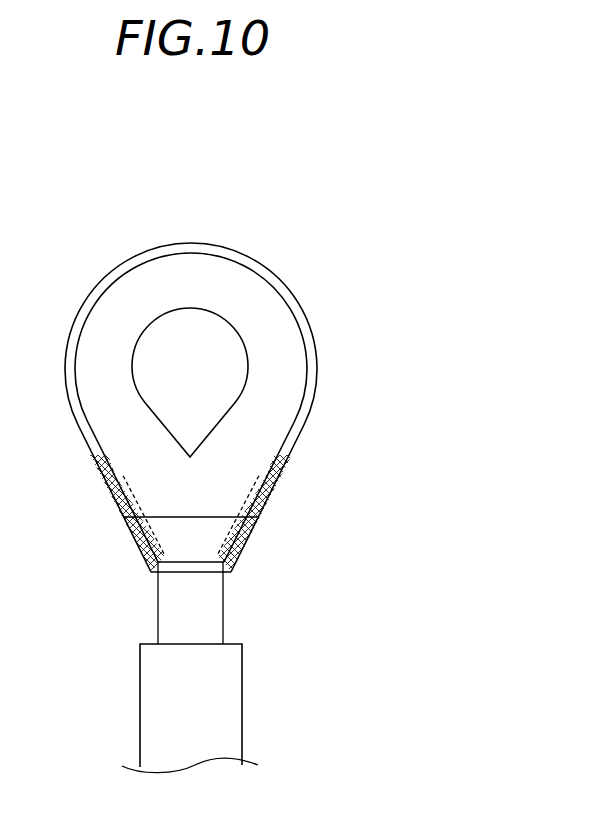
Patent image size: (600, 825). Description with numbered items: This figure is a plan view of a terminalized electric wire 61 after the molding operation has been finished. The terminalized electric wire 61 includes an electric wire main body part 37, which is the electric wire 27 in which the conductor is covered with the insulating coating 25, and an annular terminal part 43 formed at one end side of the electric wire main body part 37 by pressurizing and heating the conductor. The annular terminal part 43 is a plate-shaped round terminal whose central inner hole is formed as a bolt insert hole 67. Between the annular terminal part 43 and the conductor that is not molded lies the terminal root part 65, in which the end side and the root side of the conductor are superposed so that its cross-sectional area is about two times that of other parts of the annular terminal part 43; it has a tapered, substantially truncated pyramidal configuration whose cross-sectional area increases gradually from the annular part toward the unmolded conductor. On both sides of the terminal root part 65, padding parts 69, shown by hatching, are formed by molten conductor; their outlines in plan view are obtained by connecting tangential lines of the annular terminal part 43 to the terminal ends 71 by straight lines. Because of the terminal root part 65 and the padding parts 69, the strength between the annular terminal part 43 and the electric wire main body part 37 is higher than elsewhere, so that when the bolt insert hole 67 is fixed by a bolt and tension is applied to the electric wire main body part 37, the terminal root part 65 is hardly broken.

The terminalized electric wire 61 is at (287, 256).
The annular terminal part 43 is at (192, 277).
The bolt insert hole 67 is at (236, 398).
The padding parts 69 is at (108, 496).
The terminal root part 65 is at (208, 542).
The terminal ends 71 is at (153, 569).
The insulating coating 25 is at (184, 644).
The electric wire 27 is at (184, 708).
The electric wire main body part 37 is at (243, 693).